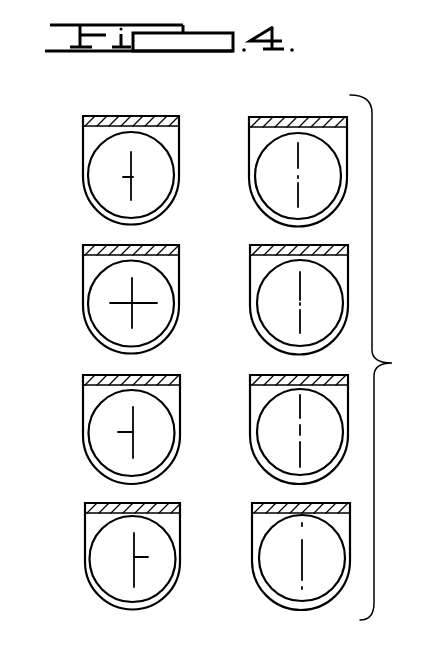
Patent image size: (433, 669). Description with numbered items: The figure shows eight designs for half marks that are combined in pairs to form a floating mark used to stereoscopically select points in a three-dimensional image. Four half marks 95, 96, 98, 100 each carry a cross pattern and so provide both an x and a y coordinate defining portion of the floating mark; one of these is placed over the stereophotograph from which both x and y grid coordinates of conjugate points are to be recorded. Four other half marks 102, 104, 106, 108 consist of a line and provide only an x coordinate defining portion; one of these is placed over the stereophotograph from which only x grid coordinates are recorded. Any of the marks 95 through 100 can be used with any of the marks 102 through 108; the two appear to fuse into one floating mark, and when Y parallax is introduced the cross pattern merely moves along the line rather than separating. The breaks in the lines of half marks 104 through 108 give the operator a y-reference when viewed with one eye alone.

The half mark 95 is at (97, 198).
The half mark 96 is at (100, 320).
The half mark 98 is at (100, 457).
The half mark 100 is at (103, 580).
The half mark 102 is at (262, 197).
The half mark 104 is at (267, 318).
The half mark 106 is at (267, 443).
The half mark 108 is at (270, 575).